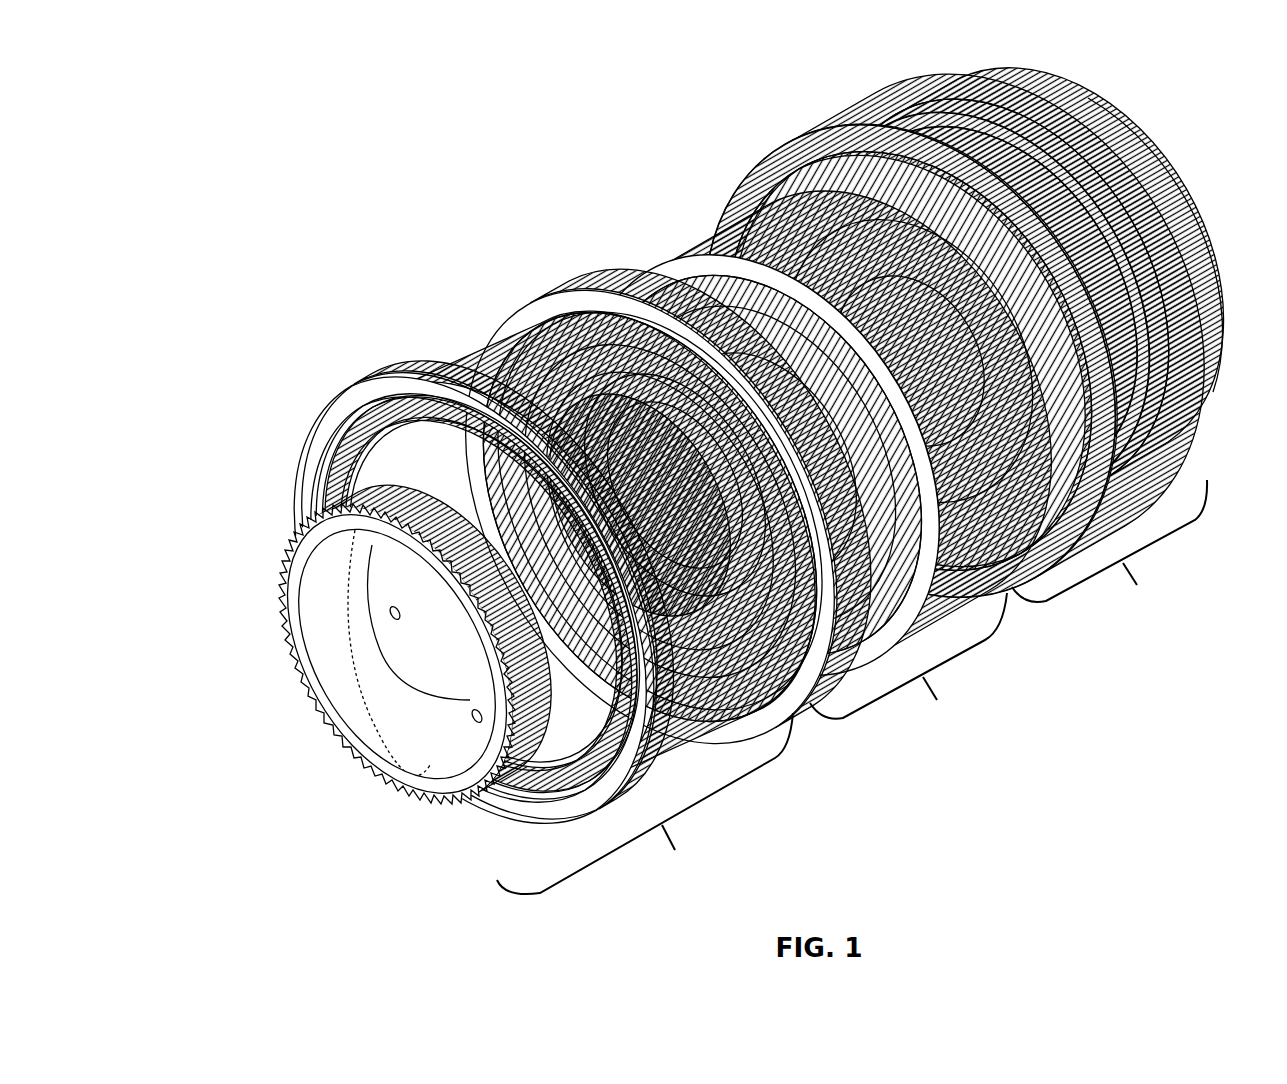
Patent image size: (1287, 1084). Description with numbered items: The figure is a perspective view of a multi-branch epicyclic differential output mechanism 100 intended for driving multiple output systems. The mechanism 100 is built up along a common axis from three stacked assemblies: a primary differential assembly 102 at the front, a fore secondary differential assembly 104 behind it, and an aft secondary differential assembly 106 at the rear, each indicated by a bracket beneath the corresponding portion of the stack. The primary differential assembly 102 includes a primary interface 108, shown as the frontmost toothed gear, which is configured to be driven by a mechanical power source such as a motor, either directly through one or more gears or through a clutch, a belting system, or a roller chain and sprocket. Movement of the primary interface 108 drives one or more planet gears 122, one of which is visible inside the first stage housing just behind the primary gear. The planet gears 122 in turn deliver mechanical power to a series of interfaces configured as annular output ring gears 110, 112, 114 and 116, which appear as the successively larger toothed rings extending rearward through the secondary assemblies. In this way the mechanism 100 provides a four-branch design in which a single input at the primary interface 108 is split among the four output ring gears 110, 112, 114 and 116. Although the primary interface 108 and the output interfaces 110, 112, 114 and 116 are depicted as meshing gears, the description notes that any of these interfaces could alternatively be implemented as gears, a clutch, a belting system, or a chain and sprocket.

The multi-branch epicyclic differential output mechanism 100 is at (706, 466).
The primary differential assembly 102 is at (645, 803).
The fore secondary differential assembly 104 is at (908, 665).
The aft secondary differential assembly 106 is at (1109, 551).
The primary interface 108 is at (290, 515).
The annular output ring gear 110 is at (590, 272).
The annular output ring gear 112 is at (700, 208).
The annular output ring gear 114 is at (814, 144).
The annular output ring gear 116 is at (926, 80).
The planet gear 122 is at (505, 355).